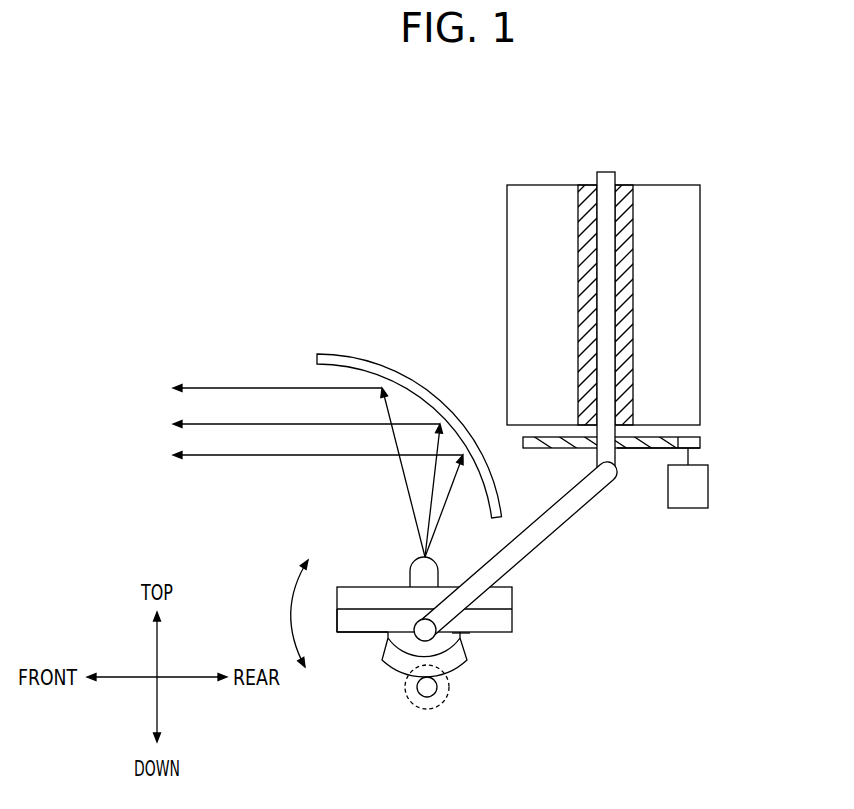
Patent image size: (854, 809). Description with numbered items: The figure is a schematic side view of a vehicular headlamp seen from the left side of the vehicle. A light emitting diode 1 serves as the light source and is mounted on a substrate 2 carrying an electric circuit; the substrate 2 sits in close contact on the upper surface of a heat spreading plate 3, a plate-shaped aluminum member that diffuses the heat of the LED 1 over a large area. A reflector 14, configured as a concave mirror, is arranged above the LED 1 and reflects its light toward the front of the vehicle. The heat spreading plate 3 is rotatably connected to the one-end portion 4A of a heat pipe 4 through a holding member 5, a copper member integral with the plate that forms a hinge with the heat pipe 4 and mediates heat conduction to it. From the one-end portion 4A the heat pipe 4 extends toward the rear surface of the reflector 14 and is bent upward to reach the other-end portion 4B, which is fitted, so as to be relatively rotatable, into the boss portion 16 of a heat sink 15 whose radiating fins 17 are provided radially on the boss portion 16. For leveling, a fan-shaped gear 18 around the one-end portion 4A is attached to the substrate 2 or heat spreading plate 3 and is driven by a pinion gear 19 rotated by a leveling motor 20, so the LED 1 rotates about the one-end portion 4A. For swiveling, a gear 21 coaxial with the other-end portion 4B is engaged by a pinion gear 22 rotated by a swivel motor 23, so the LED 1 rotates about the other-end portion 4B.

The light emitting diode (LED) 1 is at (408, 566).
The substrate 2 is at (514, 600).
The heat spreading plate 3 is at (345, 633).
The heat pipe 4 is at (572, 518).
The one-end portion of heat pipe 4A is at (410, 636).
The other-end portion of heat pipe 4B is at (606, 182).
The holding member 5 is at (452, 633).
The reflector 14 is at (392, 370).
The heat sink 15 is at (642, 321).
The boss portion 16 is at (620, 187).
The radiating fins 17 is at (700, 287).
The fan-shaped gear 18 is at (388, 665).
The pinion gear 19 is at (428, 698).
The leveling motor 20 is at (448, 703).
The gear 21 is at (640, 449).
The pinion gear 22 is at (702, 442).
The swivel motor 23 is at (710, 490).